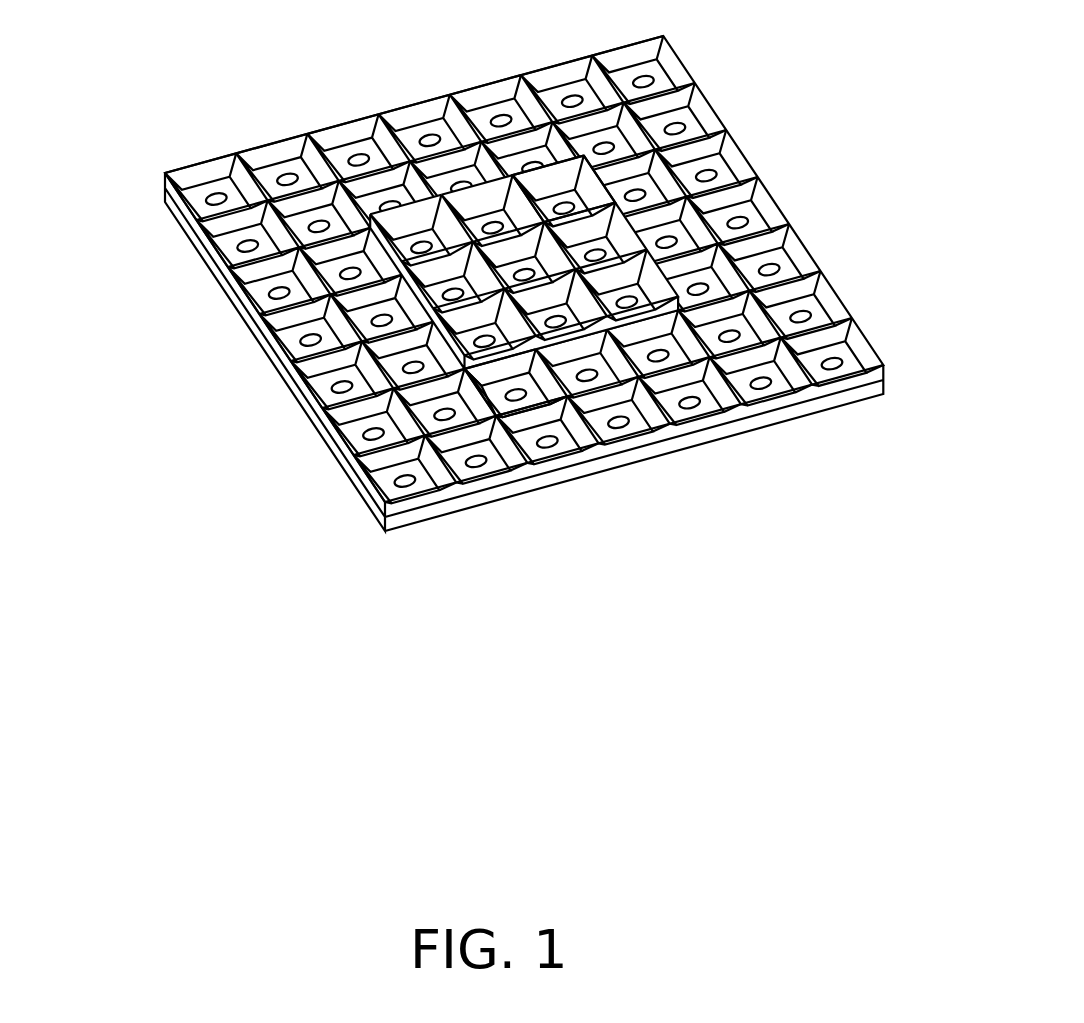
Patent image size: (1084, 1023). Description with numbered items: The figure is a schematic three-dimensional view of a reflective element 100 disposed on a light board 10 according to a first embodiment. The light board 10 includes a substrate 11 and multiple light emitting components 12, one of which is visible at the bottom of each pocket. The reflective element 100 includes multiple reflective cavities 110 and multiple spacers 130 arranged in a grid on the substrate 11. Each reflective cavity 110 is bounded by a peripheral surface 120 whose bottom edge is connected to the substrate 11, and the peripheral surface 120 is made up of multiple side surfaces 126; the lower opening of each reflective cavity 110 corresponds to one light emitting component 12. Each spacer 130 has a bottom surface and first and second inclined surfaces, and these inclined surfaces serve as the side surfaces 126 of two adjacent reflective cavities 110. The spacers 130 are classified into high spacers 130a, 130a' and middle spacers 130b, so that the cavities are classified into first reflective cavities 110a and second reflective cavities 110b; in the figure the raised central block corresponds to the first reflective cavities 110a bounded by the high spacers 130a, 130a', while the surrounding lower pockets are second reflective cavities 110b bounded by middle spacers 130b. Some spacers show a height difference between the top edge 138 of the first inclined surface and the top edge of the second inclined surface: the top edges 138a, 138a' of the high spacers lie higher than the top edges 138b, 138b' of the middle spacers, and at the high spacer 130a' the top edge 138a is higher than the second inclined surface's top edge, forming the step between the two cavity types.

The reflective element 100 is at (497, 349).
The light board 10 is at (465, 283).
The substrate 11 is at (166, 200).
The light emitting component 12 is at (211, 193).
The reflective cavity 110 is at (882, 128).
The first reflective cavity 110a is at (570, 200).
The second reflective cavity 110b is at (650, 195).
The peripheral surface 120 is at (330, 464).
The side surface 126 is at (382, 518).
The spacer 130 is at (365, 285).
The high spacer 130a is at (294, 290).
The high spacer 130a' is at (309, 298).
The middle spacer 130b is at (362, 300).
The top edge of the first inclined surface 138 is at (583, 505).
The top edge of the first inclined surface of the high spacer 138a is at (643, 494).
The top edge of the second inclined surface of the high spacer 138a' is at (574, 503).
The top edge of the first inclined surface of the middle spacer 138b is at (478, 490).
The top edge of the second inclined surface of the middle spacer 138b' is at (536, 503).